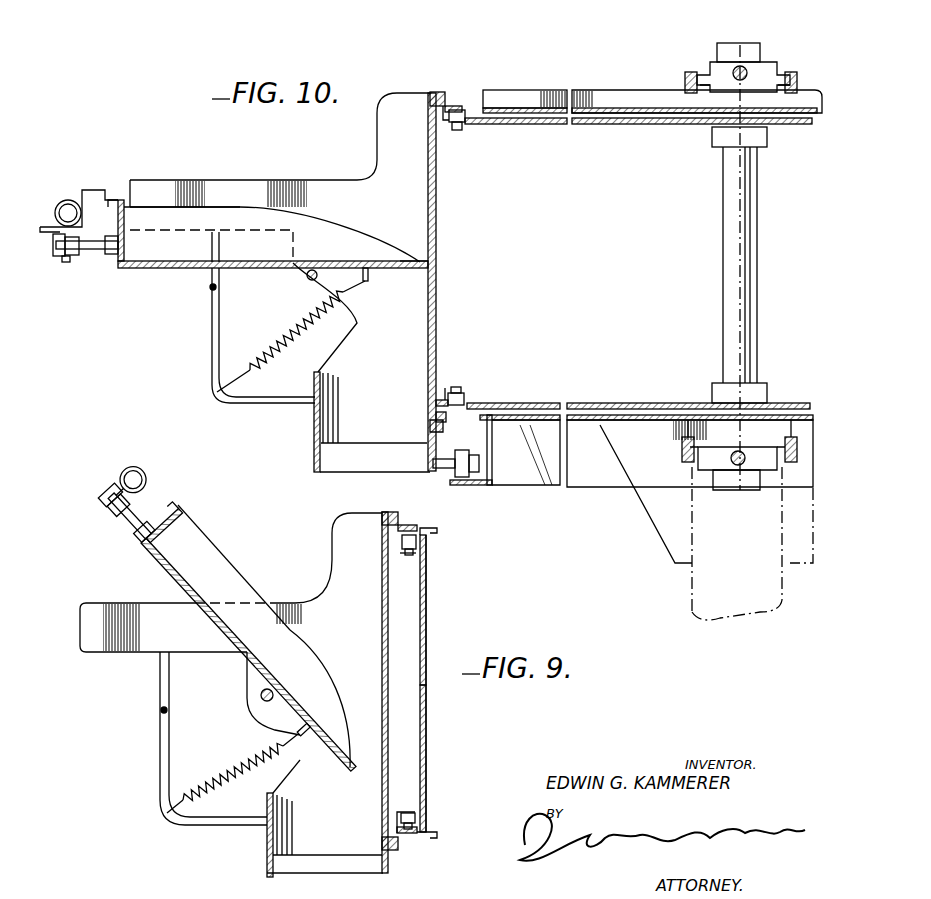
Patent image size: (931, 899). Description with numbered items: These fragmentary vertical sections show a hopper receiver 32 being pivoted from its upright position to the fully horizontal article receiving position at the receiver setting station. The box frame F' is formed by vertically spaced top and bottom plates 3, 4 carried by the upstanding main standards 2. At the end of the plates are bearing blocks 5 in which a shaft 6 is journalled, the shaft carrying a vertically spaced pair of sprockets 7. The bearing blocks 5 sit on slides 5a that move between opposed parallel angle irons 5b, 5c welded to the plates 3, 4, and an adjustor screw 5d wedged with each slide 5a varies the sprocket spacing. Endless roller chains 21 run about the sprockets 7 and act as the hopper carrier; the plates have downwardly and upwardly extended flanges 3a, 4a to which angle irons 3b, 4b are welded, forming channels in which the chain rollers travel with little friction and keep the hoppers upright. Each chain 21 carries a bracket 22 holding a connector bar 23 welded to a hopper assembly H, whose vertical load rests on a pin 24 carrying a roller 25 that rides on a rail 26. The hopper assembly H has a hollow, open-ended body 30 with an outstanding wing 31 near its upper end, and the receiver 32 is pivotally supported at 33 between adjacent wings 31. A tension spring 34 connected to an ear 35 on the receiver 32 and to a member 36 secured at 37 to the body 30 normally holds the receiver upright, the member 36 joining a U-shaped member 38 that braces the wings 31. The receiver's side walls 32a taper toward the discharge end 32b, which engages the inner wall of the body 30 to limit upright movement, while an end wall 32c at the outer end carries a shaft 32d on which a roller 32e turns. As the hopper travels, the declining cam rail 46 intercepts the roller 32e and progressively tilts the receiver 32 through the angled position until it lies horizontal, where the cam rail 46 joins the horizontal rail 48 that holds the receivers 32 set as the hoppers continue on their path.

In FIG. 10, the main standard 2 is at (700, 598).
In FIG. 10, the top plate 3 is at (528, 90).
In FIG. 9, the top plate 3 is at (437, 532).
In FIG. 9, the flange 3a is at (427, 597).
In FIG. 9, the angle iron 3b is at (400, 555).
In FIG. 10, the bottom plate 4 is at (543, 420).
In FIG. 9, the bottom plate 4 is at (438, 834).
In FIG. 9, the flange 4a is at (427, 780).
In FIG. 9, the angle iron 4b is at (398, 820).
In FIG. 10, the bearing block 5 is at (768, 62).
In FIG. 10, the slide 5a is at (708, 66).
In FIG. 10, the angle iron 5b is at (688, 80).
In FIG. 10, the angle iron 5c is at (688, 445).
In FIG. 10, the adjustor screw 5d is at (741, 66).
In FIG. 10, the shaft 6 is at (722, 188).
In FIG. 10, the sprocket 7 is at (566, 122).
In FIG. 10, the roller chain 21 is at (452, 128).
In FIG. 9, the roller chain 21 is at (420, 550).
In FIG. 10, the bracket 22 is at (450, 107).
In FIG. 9, the bracket 22 is at (406, 526).
In FIG. 10, the connector bar 23 is at (440, 92).
In FIG. 9, the connector bar 23 is at (383, 514).
In FIG. 10, the pin 24 is at (432, 455).
In FIG. 10, the roller 25 is at (465, 487).
In FIG. 10, the rail 26 is at (487, 432).
In FIG. 10, the hopper body 30 is at (427, 360).
In FIG. 9, the hopper body 30 is at (268, 858).
In FIG. 10, the wing 31 is at (235, 180).
In FIG. 9, the wing 31 is at (85, 603).
In FIG. 10, the hopper receiver 32 is at (168, 268).
In FIG. 9, the hopper receiver 32 is at (157, 566).
In FIG. 10, the side wall 32a is at (152, 205).
In FIG. 9, the side wall 32a is at (215, 552).
In FIG. 10, the discharge end 32b is at (428, 258).
In FIG. 9, the discharge end 32b is at (350, 770).
In FIG. 10, the end wall 32c is at (112, 203).
In FIG. 9, the end wall 32c is at (172, 500).
In FIG. 10, the shaft 32d is at (92, 250).
In FIG. 9, the shaft 32d is at (122, 520).
In FIG. 10, the roller 32e is at (66, 262).
In FIG. 9, the roller 32e is at (92, 503).
In FIG. 10, the pivot 33 is at (307, 277).
In FIG. 9, the pivot 33 is at (260, 695).
In FIG. 10, the tension spring 34 is at (290, 342).
In FIG. 9, the tension spring 34 is at (237, 770).
In FIG. 10, the ear 35 is at (366, 282).
In FIG. 9, the ear 35 is at (295, 733).
In FIG. 10, the member 36 is at (212, 380).
In FIG. 9, the member 36 is at (170, 824).
In FIG. 10, the securing point 37 is at (314, 400).
In FIG. 9, the securing point 37 is at (268, 812).
In FIG. 10, the U-shaped member 38 is at (212, 290).
In FIG. 9, the U-shaped member 38 is at (160, 686).
In FIG. 10, the cam rail 46 is at (70, 200).
In FIG. 9, the cam rail 46 is at (146, 470).
In FIG. 10, the rail 48 is at (45, 227).
In FIG. 10, the hopper assembly H is at (439, 301).
In FIG. 9, the hopper assembly H is at (393, 642).
In FIG. 9, the box frame F' is at (457, 683).